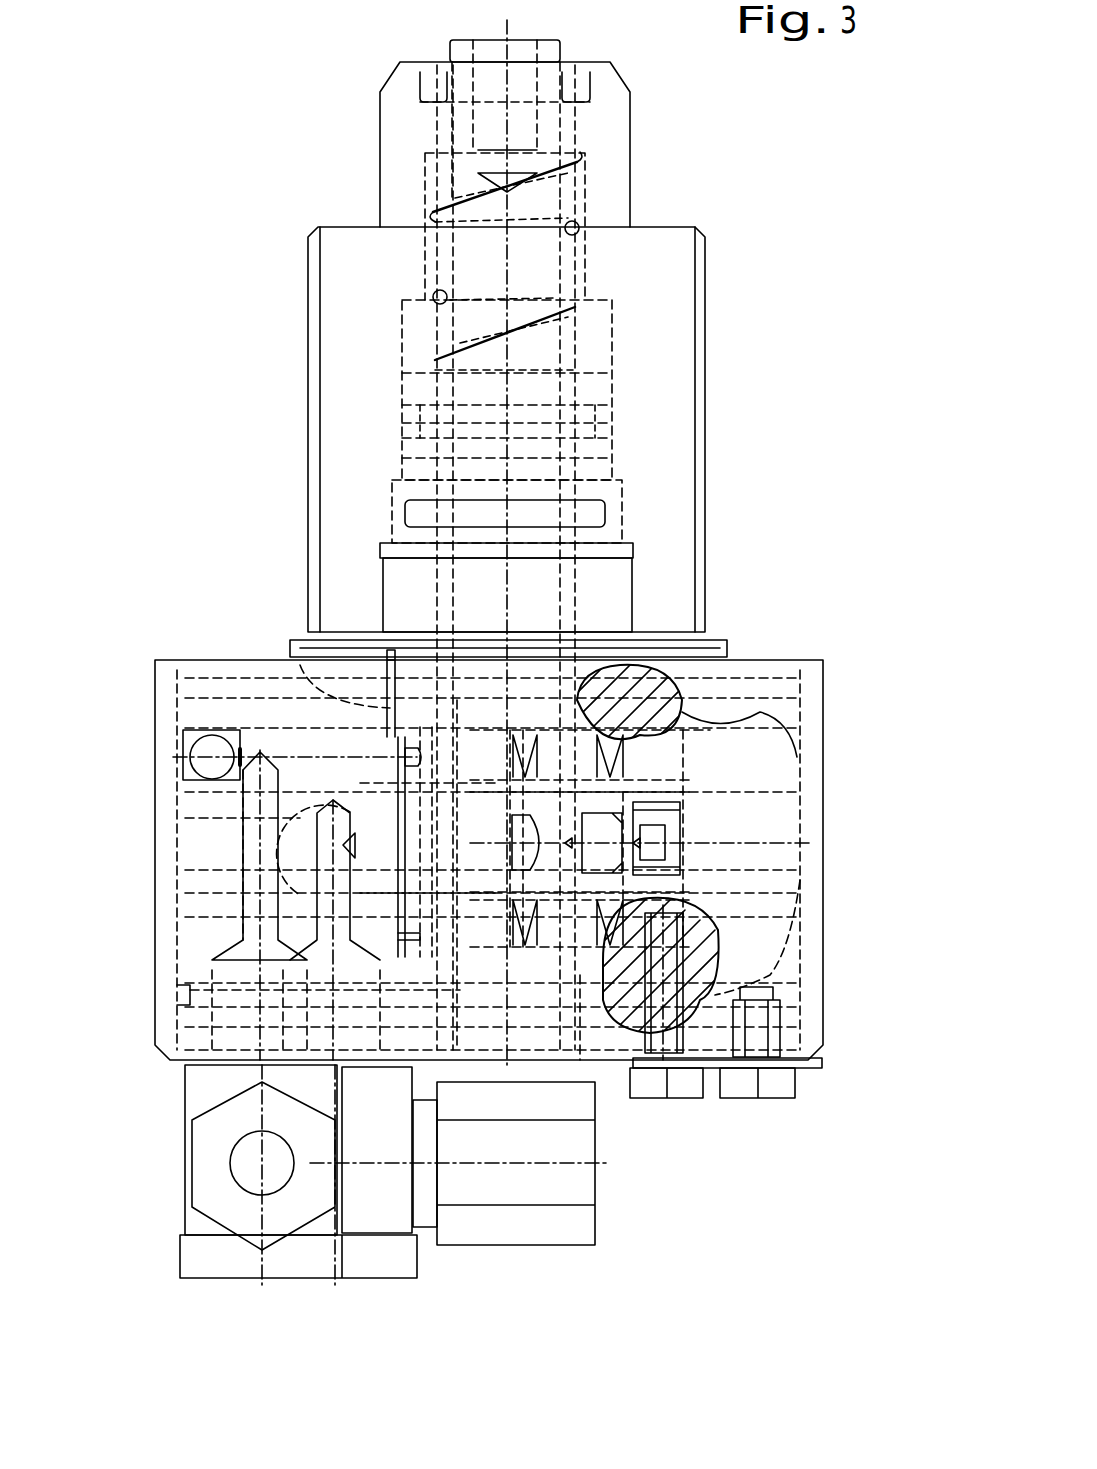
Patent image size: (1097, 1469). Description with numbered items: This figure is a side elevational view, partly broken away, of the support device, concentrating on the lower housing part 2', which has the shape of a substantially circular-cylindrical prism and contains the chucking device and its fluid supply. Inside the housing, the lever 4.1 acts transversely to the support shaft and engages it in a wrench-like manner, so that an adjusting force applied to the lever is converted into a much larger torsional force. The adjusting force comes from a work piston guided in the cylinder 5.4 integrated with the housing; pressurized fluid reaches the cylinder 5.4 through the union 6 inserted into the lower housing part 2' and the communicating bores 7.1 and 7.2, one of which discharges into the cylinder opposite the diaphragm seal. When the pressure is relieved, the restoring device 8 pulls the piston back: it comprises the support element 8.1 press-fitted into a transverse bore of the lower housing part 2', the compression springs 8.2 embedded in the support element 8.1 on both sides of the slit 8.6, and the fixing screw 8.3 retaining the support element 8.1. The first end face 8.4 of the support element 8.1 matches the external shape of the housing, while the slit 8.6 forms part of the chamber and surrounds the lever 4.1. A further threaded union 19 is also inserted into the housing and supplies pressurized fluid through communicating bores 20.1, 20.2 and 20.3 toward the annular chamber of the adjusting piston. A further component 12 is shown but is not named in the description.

The lower housing part 2' is at (442, 860).
The lever 4.1 is at (680, 810).
The cylinder 5.4 is at (330, 897).
The union 6 is at (383, 1276).
The communicating bore 7.1 is at (243, 922).
The communicating bore 7.2 is at (383, 827).
The restoring device 8 is at (813, 1167).
The support element 8.1 is at (637, 753).
The compression springs 8.2 is at (630, 738).
The fixing screw 8.3 is at (655, 1095).
The first end face of the support element 8.4 is at (783, 915).
The slit 8.6 is at (675, 835).
The mounting plate 12 is at (813, 1070).
The further threaded union 19 is at (215, 1265).
The communicating bore 20.1 is at (245, 822).
The communicating bore 20.2 is at (317, 773).
The communicating bore 20.3 is at (300, 665).